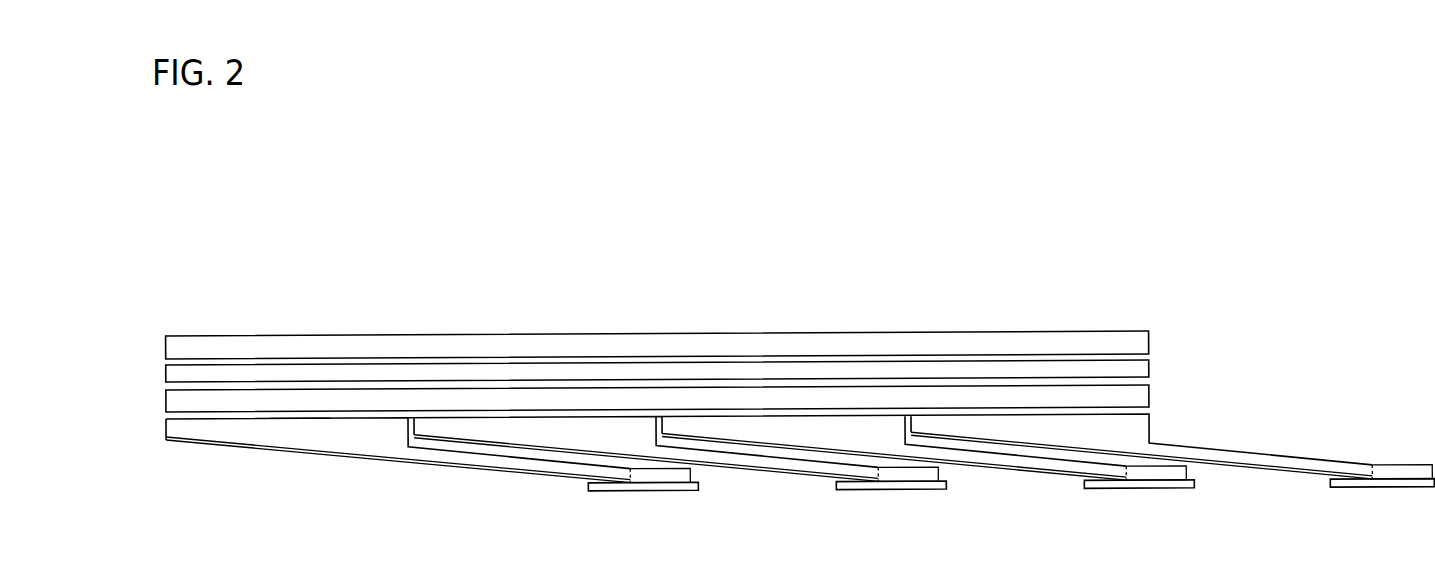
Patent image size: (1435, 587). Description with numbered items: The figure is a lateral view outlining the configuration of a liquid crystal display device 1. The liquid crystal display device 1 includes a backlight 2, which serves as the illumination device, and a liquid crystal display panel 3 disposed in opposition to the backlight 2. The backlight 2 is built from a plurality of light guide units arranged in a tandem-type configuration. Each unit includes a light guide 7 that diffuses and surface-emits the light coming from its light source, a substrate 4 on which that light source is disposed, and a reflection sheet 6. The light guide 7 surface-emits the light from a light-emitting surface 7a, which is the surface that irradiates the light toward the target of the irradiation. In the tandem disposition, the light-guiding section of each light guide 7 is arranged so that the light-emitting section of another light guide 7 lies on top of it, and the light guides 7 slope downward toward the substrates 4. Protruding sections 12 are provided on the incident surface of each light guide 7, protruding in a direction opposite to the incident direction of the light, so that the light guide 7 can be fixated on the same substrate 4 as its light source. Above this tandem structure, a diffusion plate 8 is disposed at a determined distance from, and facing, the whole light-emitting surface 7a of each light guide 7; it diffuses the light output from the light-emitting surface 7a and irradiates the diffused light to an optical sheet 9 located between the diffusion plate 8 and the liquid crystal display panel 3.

The liquid crystal display device 1 is at (995, 221).
The backlight 2 is at (128, 360).
The liquid crystal display panel 3 is at (167, 345).
The optical sheet 9 is at (167, 373).
The diffusion plate 8 is at (167, 400).
The light guide 7 is at (167, 427).
The light-emitting surface 7a is at (286, 421).
The reflection sheet 6 is at (185, 444).
The substrate 4 is at (609, 493).
The protruding section 12 is at (652, 479).